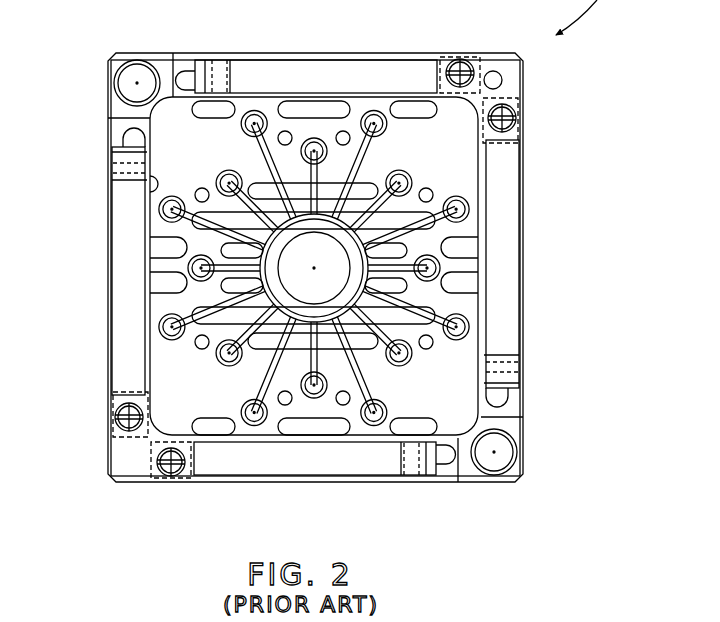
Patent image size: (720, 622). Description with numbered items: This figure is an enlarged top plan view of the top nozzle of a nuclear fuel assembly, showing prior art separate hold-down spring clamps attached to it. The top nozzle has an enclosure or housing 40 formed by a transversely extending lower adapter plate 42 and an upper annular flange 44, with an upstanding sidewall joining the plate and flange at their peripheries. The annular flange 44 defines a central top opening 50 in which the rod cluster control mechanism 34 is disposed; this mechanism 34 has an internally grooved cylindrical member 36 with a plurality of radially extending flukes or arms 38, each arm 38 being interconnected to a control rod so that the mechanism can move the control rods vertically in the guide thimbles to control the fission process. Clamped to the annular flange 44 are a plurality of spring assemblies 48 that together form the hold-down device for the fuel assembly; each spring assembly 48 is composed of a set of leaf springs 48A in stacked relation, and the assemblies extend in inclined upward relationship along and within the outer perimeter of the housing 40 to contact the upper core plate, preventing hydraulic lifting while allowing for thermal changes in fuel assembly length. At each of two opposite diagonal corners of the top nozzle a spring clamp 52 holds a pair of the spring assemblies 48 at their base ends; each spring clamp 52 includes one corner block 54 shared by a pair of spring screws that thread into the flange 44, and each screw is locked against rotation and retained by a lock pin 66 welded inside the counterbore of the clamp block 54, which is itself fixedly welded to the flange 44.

The rod cluster control mechanism 34 is at (460, 230).
The internally grooved cylindrical member 36 is at (373, 282).
The radially extending flukes or arms 38 is at (275, 165).
The enclosure or housing 40 is at (523, 248).
The lower adapter plate 42 is at (268, 432).
The upper annular flange 44 is at (186, 58).
The spring assemblies 48 is at (250, 51).
The leaf springs 48A is at (308, 58).
The central top opening 50 is at (158, 183).
The spring clamp 52 is at (493, 53).
The corner block 54 is at (508, 92).
The lock pin 66 is at (448, 62).